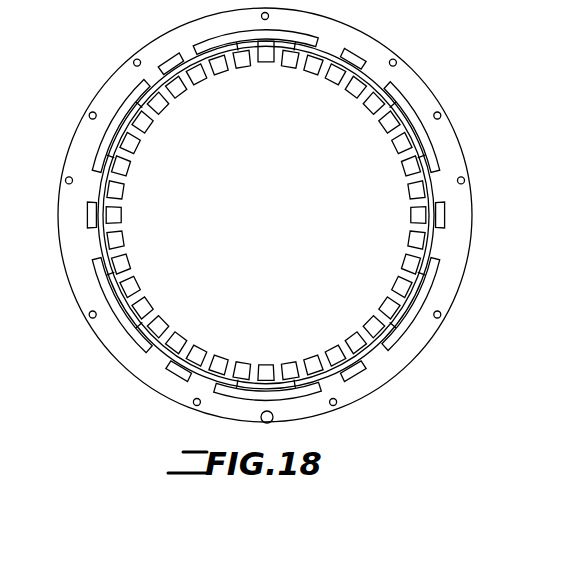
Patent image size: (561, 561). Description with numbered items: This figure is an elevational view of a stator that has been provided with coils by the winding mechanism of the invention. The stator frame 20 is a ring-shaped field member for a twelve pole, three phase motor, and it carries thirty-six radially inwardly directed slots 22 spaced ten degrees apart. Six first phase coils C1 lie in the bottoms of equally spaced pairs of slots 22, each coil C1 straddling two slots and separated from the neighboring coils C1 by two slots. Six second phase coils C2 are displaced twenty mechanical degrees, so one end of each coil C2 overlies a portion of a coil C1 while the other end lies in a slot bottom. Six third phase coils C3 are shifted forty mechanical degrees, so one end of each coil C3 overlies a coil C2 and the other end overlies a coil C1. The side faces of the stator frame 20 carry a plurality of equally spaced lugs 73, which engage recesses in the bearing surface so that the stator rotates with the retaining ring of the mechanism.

The stator frame 20 is at (410, 75).
The slots 22 is at (157, 107).
The lugs 73 is at (270, 15).
The first phase coils C1 is at (228, 42).
The second phase coils C2 is at (157, 80).
The third phase coils C3 is at (205, 68).